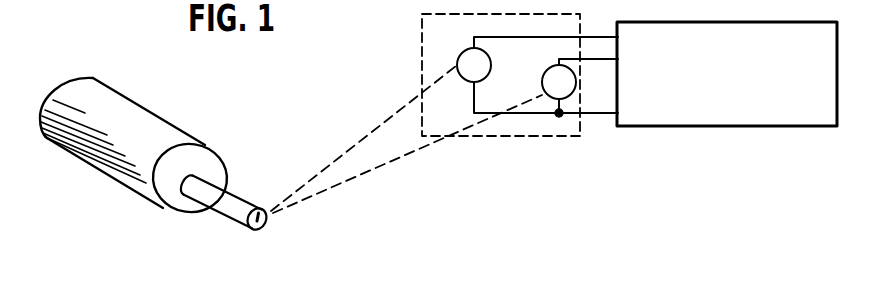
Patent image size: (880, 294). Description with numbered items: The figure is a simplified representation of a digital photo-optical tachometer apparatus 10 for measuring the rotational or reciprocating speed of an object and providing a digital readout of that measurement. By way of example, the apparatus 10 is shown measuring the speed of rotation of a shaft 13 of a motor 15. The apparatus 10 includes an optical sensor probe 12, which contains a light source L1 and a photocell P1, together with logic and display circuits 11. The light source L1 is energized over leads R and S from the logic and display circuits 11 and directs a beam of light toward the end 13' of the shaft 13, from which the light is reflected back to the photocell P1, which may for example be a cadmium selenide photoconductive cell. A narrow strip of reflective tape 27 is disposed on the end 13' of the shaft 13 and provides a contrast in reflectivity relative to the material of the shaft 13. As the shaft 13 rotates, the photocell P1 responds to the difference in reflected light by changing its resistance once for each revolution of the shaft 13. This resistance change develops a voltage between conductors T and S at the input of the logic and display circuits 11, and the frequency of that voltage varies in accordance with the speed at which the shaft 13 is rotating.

The digital photo-optical tachometer apparatus 10 is at (612, 168).
The logic and display circuits 11 is at (727, 74).
The optical sensor probe 12 is at (421, 42).
The shaft 13 is at (212, 214).
The end of the shaft 13' is at (248, 244).
The motor 15 is at (178, 137).
The narrow strip of reflective tape 27 is at (259, 211).
The light source L1 is at (480, 54).
The photocell P1 is at (543, 82).